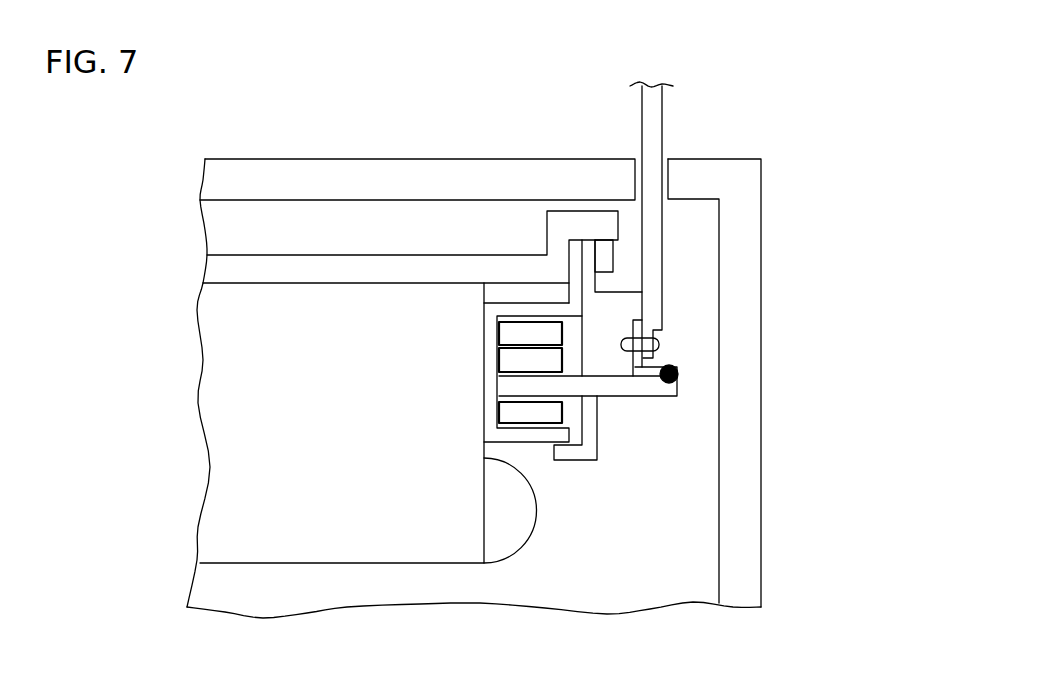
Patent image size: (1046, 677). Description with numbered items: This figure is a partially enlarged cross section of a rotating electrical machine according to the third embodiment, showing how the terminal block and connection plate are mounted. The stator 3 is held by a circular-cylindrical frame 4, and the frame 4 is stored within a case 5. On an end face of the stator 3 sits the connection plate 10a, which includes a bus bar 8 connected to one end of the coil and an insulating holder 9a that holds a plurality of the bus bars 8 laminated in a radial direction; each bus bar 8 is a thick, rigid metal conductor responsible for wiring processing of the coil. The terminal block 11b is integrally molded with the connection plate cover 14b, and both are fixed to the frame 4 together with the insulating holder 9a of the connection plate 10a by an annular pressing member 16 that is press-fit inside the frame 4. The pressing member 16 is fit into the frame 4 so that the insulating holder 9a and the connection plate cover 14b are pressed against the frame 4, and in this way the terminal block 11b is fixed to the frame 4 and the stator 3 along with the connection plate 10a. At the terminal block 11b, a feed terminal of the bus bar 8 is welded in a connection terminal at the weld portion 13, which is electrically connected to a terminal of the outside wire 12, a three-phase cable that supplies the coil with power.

The stator 3 is at (307, 563).
The frame 4 is at (230, 255).
The case 5 is at (262, 158).
The bus bar 8 is at (524, 330).
The insulating holder 9a is at (492, 313).
The connection plate 10a is at (508, 113).
The terminal block 11b is at (633, 292).
The outside wire 12 is at (662, 122).
The weld portion 13 is at (678, 375).
The connection plate cover 14b is at (598, 432).
The pressing member 16 is at (607, 247).